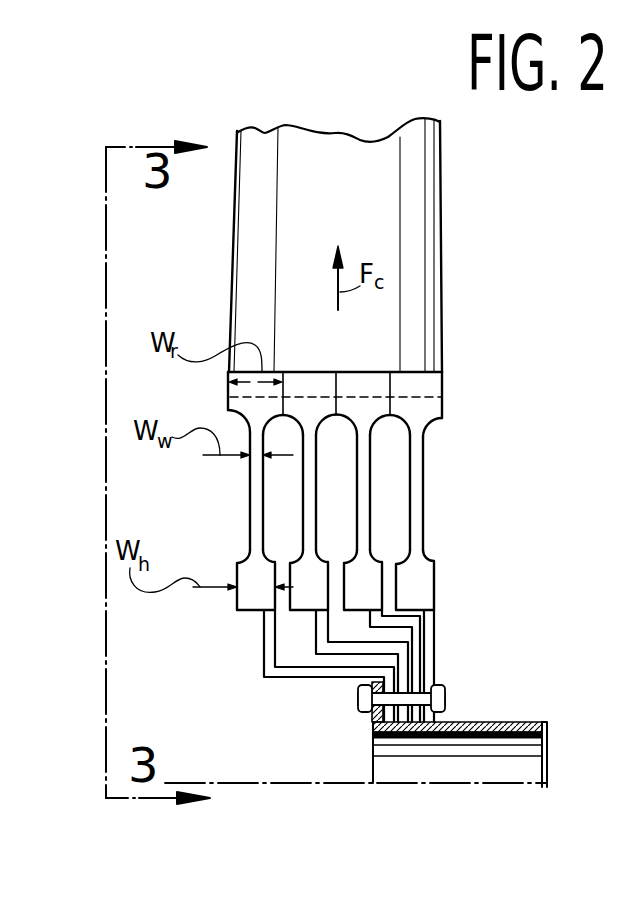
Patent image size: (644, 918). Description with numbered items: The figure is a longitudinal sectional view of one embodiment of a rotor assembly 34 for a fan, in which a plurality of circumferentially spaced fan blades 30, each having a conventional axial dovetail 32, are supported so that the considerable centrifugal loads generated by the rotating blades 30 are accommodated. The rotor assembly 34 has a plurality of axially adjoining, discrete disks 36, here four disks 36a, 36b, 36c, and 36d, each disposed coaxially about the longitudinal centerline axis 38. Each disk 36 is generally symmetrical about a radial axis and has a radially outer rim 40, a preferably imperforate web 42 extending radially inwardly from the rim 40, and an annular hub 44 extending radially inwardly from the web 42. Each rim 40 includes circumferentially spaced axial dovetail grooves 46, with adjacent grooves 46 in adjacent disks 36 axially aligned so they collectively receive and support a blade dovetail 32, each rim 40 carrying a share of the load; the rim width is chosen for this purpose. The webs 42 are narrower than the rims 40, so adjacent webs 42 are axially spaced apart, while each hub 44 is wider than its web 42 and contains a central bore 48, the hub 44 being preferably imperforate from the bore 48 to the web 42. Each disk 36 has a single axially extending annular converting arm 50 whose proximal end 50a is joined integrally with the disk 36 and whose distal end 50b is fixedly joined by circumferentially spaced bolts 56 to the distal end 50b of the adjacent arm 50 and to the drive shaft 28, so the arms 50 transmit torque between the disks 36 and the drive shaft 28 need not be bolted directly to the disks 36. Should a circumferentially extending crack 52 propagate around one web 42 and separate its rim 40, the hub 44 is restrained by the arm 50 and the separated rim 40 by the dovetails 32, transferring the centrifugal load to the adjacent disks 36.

The drive shaft 28 is at (498, 722).
The fan blade 30 is at (443, 280).
The axial dovetail 32 is at (373, 386).
The rotor assembly 34 is at (211, 635).
The disk 36 is at (503, 533).
The first disk 36a is at (240, 510).
The second disk 36b is at (294, 530).
The third disk 36c is at (381, 506).
The fourth disk 36d is at (424, 480).
The longitudinal centerline axis 38 is at (425, 786).
The rim 40 is at (442, 383).
The web 42 is at (426, 441).
The hub 44 is at (435, 590).
The axial dovetail groove 46 is at (257, 397).
The central bore 48 is at (248, 611).
The converting arm 50 is at (264, 687).
The proximal end 50a is at (272, 618).
The distal end 50b is at (395, 739).
The circumferentially extending crack 52 is at (252, 477).
The bolt 56 is at (445, 697).